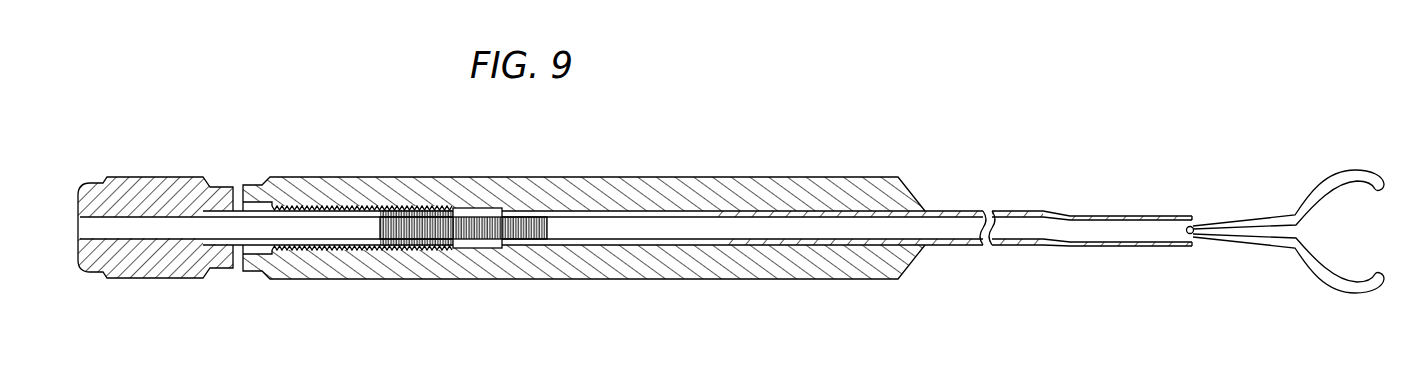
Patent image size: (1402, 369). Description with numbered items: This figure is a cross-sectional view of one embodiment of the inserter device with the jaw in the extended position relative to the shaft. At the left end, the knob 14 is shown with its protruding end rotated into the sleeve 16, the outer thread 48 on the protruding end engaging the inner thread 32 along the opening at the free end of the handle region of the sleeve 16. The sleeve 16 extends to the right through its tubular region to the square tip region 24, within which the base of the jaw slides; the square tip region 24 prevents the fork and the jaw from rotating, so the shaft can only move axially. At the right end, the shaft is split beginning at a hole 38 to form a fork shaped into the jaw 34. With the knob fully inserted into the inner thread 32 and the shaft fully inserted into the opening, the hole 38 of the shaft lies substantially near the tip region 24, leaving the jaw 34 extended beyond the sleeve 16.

The knob 14 is at (142, 178).
The sleeve 16 is at (763, 177).
The tip region 24 is at (1125, 246).
The inner thread 32 is at (308, 207).
The jaw 34 is at (1325, 177).
The hole 38 is at (1188, 226).
The outer thread 48 is at (413, 211).